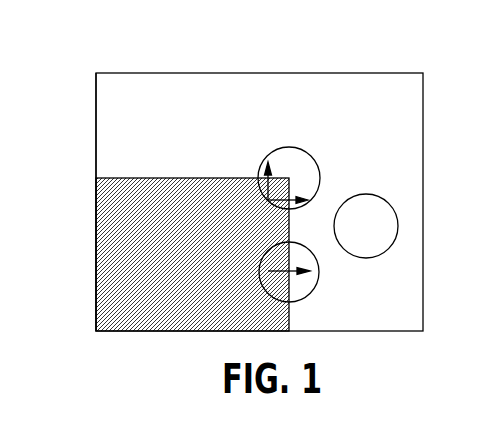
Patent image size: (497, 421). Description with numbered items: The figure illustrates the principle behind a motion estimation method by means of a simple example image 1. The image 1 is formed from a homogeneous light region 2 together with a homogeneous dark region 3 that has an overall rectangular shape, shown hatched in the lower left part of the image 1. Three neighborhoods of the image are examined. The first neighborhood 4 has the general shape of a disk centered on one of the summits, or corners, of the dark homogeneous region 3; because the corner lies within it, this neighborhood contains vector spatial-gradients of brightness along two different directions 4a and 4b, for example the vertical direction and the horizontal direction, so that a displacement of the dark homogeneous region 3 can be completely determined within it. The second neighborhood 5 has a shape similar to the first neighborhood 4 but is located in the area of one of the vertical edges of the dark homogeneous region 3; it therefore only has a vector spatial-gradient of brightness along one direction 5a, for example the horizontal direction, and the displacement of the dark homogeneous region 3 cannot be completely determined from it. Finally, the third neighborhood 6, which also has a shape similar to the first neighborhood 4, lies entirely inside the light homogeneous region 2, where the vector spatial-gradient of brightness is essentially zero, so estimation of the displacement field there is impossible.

The image 1 is at (391, 73).
The homogeneous light region 2 is at (102, 105).
The homogeneous dark region 3 is at (103, 228).
The first neighborhood 4 is at (297, 149).
The first direction 4a is at (261, 178).
The second direction 4b is at (290, 190).
The second neighborhood 5 is at (314, 279).
The direction 5a is at (286, 300).
The third neighborhood 6 is at (392, 231).